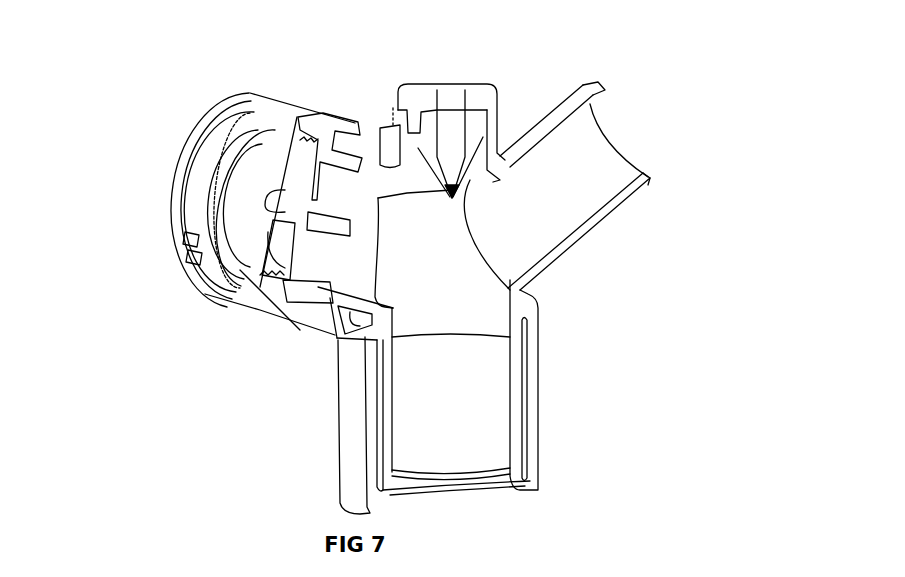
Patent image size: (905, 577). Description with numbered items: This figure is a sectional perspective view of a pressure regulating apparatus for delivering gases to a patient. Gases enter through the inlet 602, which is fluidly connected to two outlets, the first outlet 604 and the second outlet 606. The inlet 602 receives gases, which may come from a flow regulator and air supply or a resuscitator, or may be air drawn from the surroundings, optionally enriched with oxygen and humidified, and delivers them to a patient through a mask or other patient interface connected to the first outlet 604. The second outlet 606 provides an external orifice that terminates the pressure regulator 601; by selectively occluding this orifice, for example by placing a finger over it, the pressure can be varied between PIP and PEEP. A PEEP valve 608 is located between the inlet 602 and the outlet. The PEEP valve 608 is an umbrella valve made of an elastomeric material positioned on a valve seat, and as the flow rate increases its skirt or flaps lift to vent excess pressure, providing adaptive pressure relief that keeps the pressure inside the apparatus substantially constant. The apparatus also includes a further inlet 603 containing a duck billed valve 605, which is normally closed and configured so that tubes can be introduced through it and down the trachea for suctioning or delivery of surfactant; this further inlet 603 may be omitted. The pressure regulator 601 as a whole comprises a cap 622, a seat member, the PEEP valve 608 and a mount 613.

The pressure regulator 601 is at (233, 358).
The inlet 602 is at (640, 125).
The further inlet 603 is at (450, 103).
The first outlet 604 is at (443, 495).
The duck billed valve 605 is at (455, 185).
The second outlet 606 is at (350, 257).
The PEEP valve 608 is at (257, 207).
The mount 613 is at (283, 283).
The cap 622 is at (167, 205).